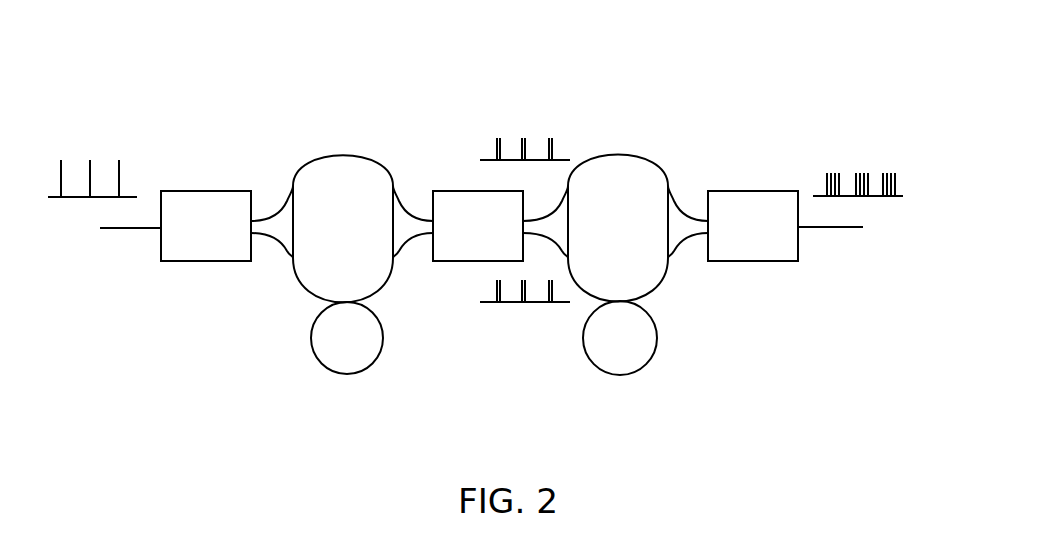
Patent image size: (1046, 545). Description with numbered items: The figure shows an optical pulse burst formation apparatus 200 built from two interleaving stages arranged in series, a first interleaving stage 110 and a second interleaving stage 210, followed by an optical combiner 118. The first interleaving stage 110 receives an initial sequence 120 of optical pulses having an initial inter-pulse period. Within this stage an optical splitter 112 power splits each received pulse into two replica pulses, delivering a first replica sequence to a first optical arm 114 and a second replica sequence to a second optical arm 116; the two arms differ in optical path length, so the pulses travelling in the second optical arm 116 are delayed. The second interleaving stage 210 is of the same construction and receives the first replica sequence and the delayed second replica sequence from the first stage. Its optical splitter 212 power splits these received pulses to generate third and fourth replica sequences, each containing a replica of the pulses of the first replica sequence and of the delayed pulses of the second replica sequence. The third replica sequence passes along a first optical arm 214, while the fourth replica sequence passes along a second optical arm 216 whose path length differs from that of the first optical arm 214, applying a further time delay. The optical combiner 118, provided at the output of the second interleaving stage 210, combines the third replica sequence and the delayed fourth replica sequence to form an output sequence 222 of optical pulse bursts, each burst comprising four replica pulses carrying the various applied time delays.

The optical pulse burst formation apparatus 200 is at (139, 378).
The first interleaving stage 110 is at (278, 91).
The optical splitter 112 is at (183, 248).
The first optical arm 114 is at (371, 134).
The second optical arm 116 is at (280, 324).
The optical combiner 118 is at (760, 248).
The initial sequence of optical pulses 120 is at (93, 135).
The second interleaving stage 210 is at (608, 104).
The optical splitter 212 is at (459, 246).
The first optical arm 214 is at (676, 140).
The second optical arm 216 is at (562, 328).
The output sequence of optical pulse bursts 222 is at (877, 131).